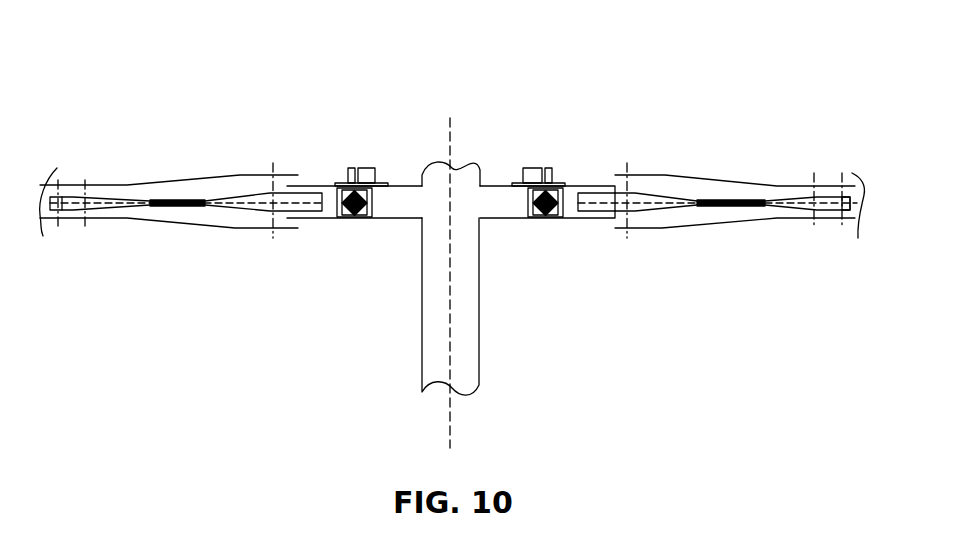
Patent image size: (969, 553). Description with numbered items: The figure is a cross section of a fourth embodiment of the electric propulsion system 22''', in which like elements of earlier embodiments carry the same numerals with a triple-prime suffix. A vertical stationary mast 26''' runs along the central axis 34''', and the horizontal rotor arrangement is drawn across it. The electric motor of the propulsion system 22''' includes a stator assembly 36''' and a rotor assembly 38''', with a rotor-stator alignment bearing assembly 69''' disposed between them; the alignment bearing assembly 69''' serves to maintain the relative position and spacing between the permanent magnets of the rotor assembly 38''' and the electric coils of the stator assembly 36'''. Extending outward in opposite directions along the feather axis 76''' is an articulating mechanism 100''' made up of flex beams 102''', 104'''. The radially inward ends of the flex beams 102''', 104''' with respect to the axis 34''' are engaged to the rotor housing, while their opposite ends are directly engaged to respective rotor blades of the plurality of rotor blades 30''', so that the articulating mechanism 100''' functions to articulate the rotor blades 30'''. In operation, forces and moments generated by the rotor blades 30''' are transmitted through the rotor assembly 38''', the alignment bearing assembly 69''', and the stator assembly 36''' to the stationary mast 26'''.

The electric propulsion system 22''' is at (450, 130).
The stationary mast 26''' is at (487, 285).
The rotor blades 30''' is at (838, 176).
The axis 34''' is at (407, 288).
The stator assembly 36''' is at (450, 137).
The rotor assembly 38''' is at (572, 154).
The rotor-stator alignment bearing assembly 69''' is at (466, 248).
The feather axis 76''' is at (169, 170).
The articulating mechanism 100''' is at (735, 159).
The flex beam 102''' is at (732, 242).
The flex beam 104''' is at (186, 243).